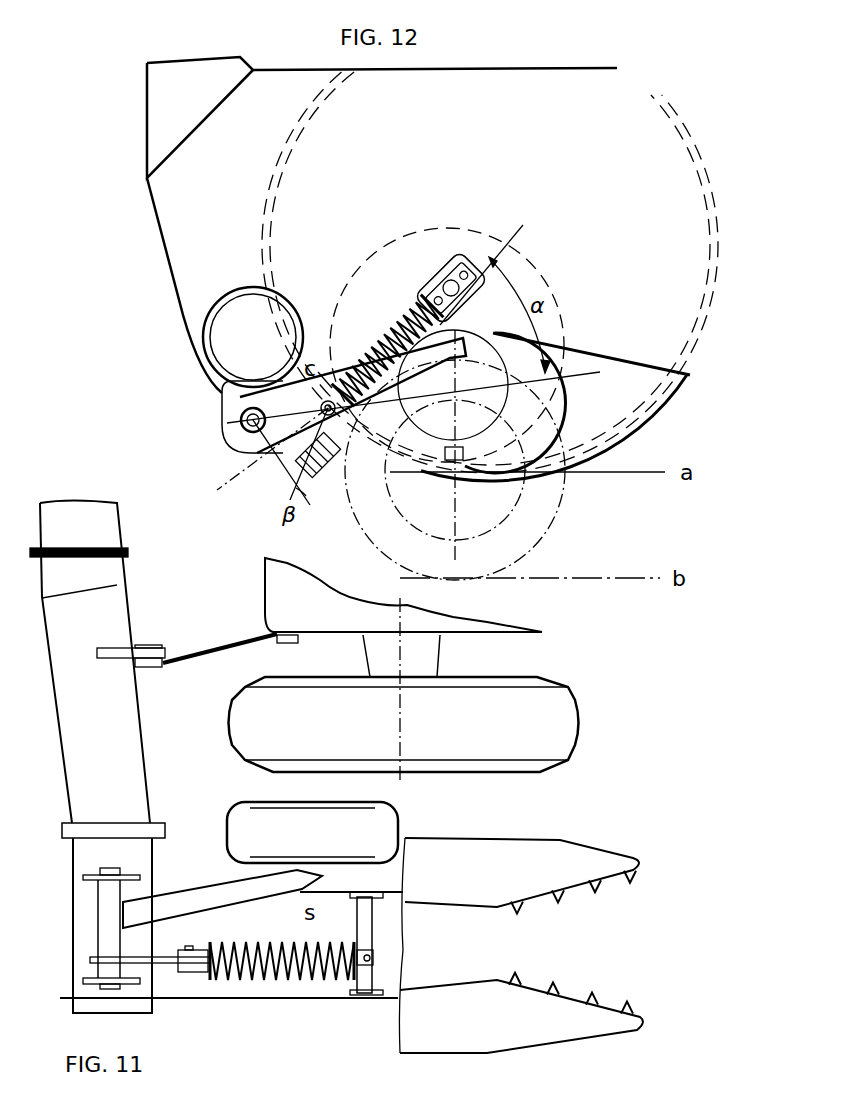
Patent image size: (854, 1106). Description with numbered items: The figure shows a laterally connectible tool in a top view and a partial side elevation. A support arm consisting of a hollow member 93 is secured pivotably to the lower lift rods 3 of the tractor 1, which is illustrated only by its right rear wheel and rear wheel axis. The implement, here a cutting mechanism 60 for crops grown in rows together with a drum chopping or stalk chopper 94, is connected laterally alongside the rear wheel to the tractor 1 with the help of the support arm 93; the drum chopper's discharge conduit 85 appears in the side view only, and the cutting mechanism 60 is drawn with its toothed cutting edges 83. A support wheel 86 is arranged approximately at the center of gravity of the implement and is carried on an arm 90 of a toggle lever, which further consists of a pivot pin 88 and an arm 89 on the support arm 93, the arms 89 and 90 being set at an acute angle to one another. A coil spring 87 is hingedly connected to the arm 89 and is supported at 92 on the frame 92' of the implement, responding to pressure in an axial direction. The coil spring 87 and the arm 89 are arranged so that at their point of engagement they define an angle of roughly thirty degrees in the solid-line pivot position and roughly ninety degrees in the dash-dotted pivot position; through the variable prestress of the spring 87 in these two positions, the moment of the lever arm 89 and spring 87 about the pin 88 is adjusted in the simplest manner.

In FIG. 12, the tractor 1 is at (690, 345).
In FIG. 11, the tractor 1 is at (565, 708).
In FIG. 11, the lower lift rods 3 is at (222, 635).
In FIG. 11, the cutting mechanism 60 is at (560, 838).
In FIG. 11, the teeth 83 is at (636, 856).
In FIG. 12, the discharge conduit 85 is at (160, 126).
In FIG. 12, the support wheel 86 is at (558, 375).
In FIG. 11, the support wheel 86 is at (393, 813).
In FIG. 12, the coil spring 87 is at (360, 366).
In FIG. 11, the coil spring 87 is at (267, 980).
In FIG. 12, the pivot pin 88 is at (235, 447).
In FIG. 11, the pivot pin 88 is at (107, 942).
In FIG. 12, the arm 89 is at (298, 455).
In FIG. 11, the arm 89 is at (163, 967).
In FIG. 12, the arm 90 is at (440, 380).
In FIG. 11, the arm 90 is at (137, 907).
In FIG. 12, the spring support point 92 is at (501, 275).
In FIG. 12, the frame 92' is at (447, 327).
In FIG. 11, the frame 92' is at (334, 974).
In FIG. 12, the hollow member 93 is at (212, 325).
In FIG. 11, the hollow member 93 is at (100, 578).
In FIG. 12, the drum chopper 94 is at (611, 197).
In FIG. 11, the drum chopper 94 is at (335, 993).